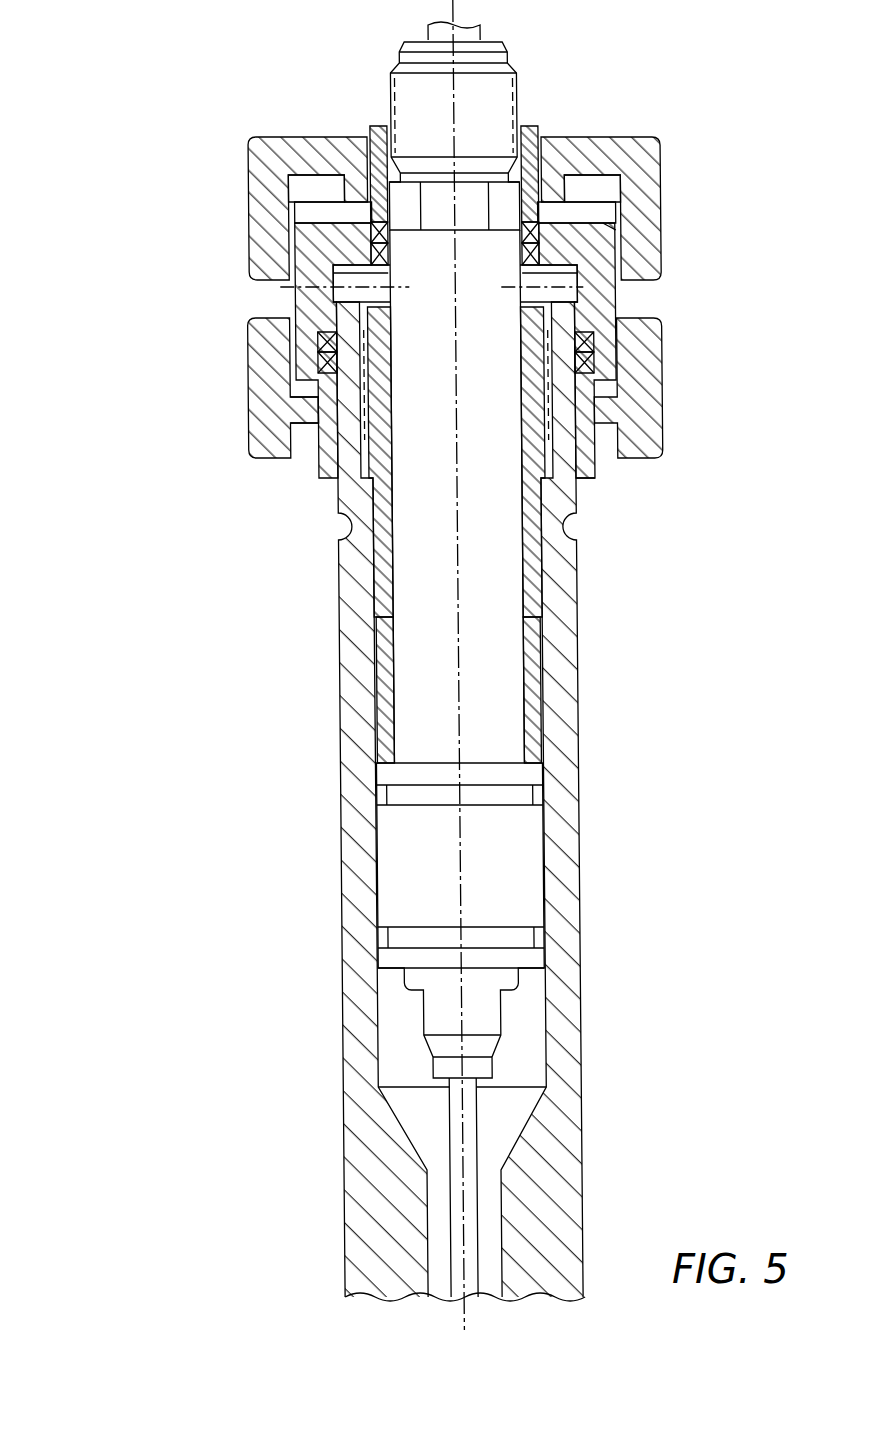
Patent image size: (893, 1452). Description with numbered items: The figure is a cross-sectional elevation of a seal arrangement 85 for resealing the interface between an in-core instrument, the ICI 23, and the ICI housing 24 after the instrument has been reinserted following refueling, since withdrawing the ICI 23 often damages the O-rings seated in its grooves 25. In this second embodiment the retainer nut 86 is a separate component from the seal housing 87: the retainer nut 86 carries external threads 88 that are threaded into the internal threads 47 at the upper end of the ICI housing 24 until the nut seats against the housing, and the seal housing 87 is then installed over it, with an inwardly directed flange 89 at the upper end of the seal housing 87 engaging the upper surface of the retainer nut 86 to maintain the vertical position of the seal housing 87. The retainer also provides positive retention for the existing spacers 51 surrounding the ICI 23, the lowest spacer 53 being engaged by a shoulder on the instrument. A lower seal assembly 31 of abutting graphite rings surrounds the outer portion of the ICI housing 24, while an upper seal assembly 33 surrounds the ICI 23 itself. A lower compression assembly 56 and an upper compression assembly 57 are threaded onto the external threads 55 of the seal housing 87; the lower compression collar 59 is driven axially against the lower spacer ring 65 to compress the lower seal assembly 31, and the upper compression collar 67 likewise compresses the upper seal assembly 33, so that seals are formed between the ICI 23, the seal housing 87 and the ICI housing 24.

The ICI 23 is at (500, 715).
The ICI housing 24 is at (355, 657).
The grooves 25 is at (380, 795).
The lower seal assembly 31 is at (320, 355).
The upper seal assembly 33 is at (385, 247).
The internal threads 47 is at (547, 405).
The spacers 51 is at (535, 565).
The lowest spacer 53 is at (532, 676).
The external threads 55 is at (628, 297).
The lower compression assembly 56 is at (670, 404).
The upper compression assembly 57 is at (648, 192).
The lower compression collar 59 is at (586, 490).
The lower spacer ring 65 is at (320, 410).
The upper compression collar 67 is at (530, 117).
The seal arrangement 85 is at (142, 480).
The retainer nut 86 is at (355, 287).
The seal housing 87 is at (579, 236).
The external threads 88 is at (350, 353).
The inwardly directed flange 89 is at (545, 248).